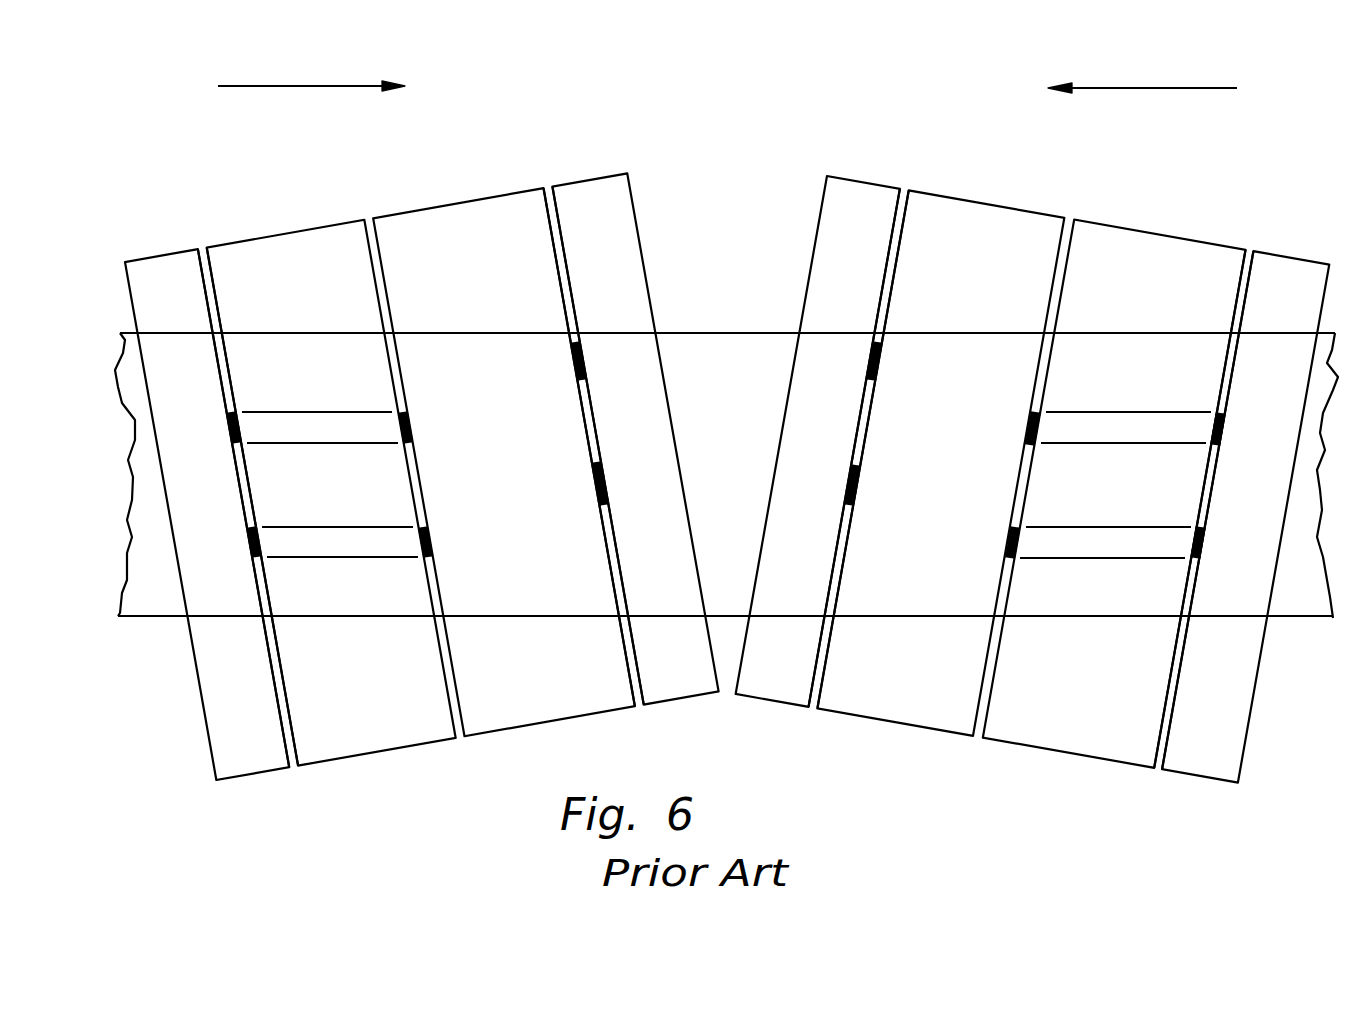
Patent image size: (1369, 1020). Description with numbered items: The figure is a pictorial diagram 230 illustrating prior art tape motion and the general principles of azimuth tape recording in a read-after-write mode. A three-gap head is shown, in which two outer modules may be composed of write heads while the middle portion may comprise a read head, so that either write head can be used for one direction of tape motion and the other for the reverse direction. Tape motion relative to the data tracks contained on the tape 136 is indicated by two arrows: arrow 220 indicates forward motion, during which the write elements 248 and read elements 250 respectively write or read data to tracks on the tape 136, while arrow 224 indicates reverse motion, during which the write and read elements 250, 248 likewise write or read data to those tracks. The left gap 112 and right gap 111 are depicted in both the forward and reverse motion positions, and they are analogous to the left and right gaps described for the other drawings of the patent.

The right gap 111 is at (640, 698).
The left gap 112 is at (292, 757).
The tape 136 is at (1295, 620).
The arrow indicating forward motion 220 is at (387, 84).
The arrow indicating reverse motion 224 is at (1062, 85).
The pictorial diagram 230 is at (808, 764).
The write elements 248 is at (403, 410).
The read elements 250 is at (233, 410).